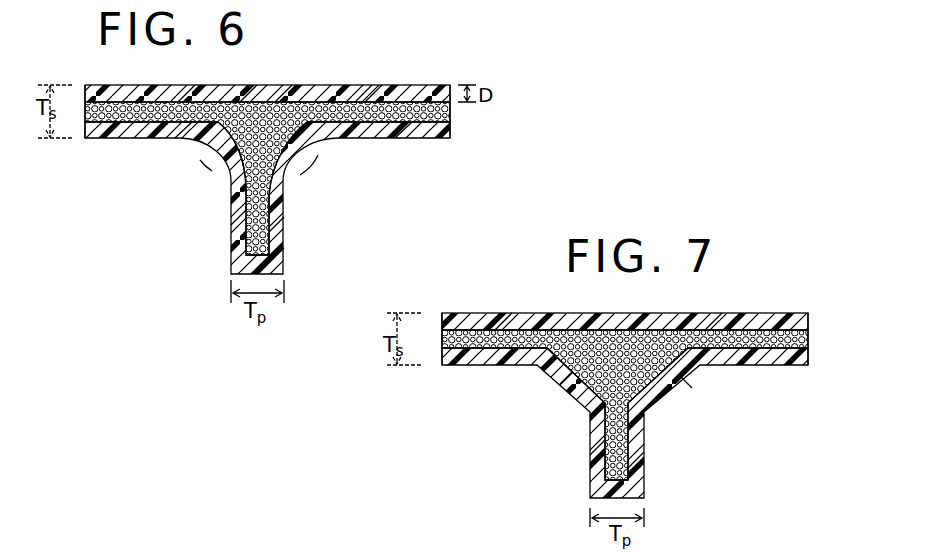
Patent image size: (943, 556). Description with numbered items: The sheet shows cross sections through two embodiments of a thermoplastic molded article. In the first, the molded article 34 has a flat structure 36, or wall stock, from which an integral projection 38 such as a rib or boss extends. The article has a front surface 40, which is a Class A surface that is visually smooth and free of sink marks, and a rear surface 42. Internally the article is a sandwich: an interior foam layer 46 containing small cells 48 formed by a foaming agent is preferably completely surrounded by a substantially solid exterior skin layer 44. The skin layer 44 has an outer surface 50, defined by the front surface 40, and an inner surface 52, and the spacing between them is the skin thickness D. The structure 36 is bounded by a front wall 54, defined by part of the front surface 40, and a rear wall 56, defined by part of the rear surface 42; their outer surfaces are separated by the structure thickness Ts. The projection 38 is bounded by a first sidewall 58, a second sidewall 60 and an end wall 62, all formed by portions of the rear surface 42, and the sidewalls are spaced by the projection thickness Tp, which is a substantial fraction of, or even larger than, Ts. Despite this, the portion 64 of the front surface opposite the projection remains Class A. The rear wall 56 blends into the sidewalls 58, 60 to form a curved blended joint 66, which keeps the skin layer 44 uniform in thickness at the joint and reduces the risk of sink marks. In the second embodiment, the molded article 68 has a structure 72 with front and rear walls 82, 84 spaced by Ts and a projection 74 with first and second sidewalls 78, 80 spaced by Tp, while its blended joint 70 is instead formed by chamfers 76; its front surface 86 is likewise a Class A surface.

In FIG. 6, the molded article 34 is at (272, 146).
In FIG. 6, the structure 36 is at (133, 97).
In FIG. 6, the projection 38 is at (262, 213).
In FIG. 6, the front surface 40 is at (283, 88).
In FIG. 6, the rear surface 42 is at (177, 140).
In FIG. 6, the exterior skin layer 44 is at (340, 97).
In FIG. 6, the foam layer 46 is at (374, 100).
In FIG. 6, the cells 48 is at (403, 133).
In FIG. 6, the outer surface 50 is at (363, 88).
In FIG. 6, the inner surface 52 is at (297, 108).
In FIG. 6, the front wall 54 is at (180, 88).
In FIG. 6, the rear wall 56 is at (113, 138).
In FIG. 6, the first sidewall 58 is at (237, 209).
In FIG. 6, the second sidewall 60 is at (280, 222).
In FIG. 6, the end wall 62 is at (283, 252).
In FIG. 6, the portion of the front surface opposite projection 64 is at (253, 83).
In FIG. 6, the blended joint 66 is at (205, 159).
In FIG. 7, the molded article 68 is at (615, 372).
In FIG. 7, the blended joint 70 is at (548, 398).
In FIG. 7, the structure 72 is at (717, 323).
In FIG. 7, the projection 74 is at (620, 438).
In FIG. 7, the chamfers 76 is at (572, 397).
In FIG. 7, the first sidewall 78 is at (600, 467).
In FIG. 7, the second sidewall 80 is at (633, 458).
In FIG. 7, the front wall 82 is at (470, 320).
In FIG. 7, the rear wall 84 is at (468, 366).
In FIG. 7, the front surface 86 is at (503, 312).